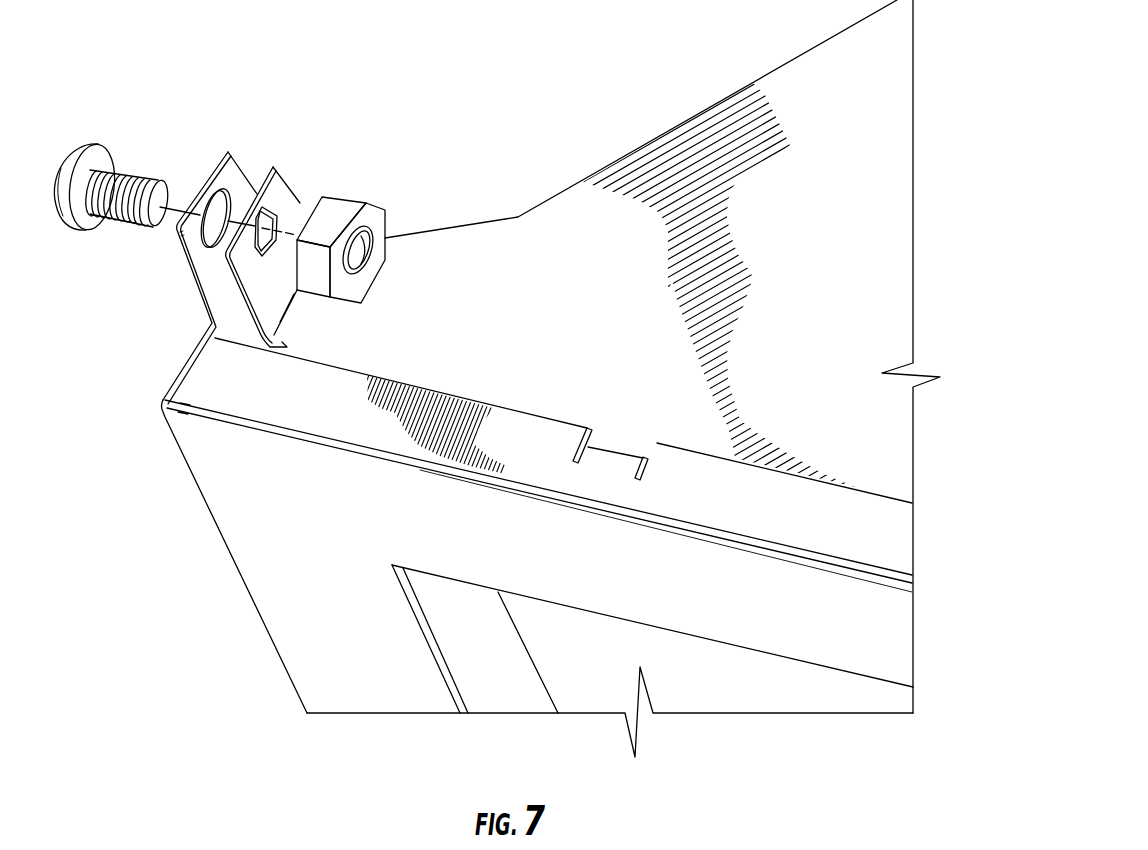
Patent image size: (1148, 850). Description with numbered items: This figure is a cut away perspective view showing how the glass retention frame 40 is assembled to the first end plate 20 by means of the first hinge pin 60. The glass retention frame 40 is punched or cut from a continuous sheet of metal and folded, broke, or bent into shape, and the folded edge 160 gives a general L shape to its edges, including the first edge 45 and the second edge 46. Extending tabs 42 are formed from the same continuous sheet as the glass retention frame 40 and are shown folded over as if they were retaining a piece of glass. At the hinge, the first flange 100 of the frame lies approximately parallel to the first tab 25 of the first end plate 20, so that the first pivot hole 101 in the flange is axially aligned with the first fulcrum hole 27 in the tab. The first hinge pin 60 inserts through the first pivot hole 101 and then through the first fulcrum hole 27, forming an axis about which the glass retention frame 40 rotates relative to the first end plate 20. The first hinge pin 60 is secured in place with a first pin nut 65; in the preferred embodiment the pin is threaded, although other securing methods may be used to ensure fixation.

The first end plate 20 is at (662, 356).
The first tab 25 is at (279, 213).
The first fulcrum hole 27 is at (266, 258).
The glass retention frame 40 is at (564, 547).
The extending tabs 42 is at (609, 471).
The first edge 45 is at (222, 542).
The second edge 46 is at (546, 440).
The first hinge pin 60 is at (69, 159).
The first pin nut 65 is at (333, 214).
The first flange 100 is at (173, 240).
The first pivot hole 101 is at (218, 201).
The folded edge 160 is at (824, 556).